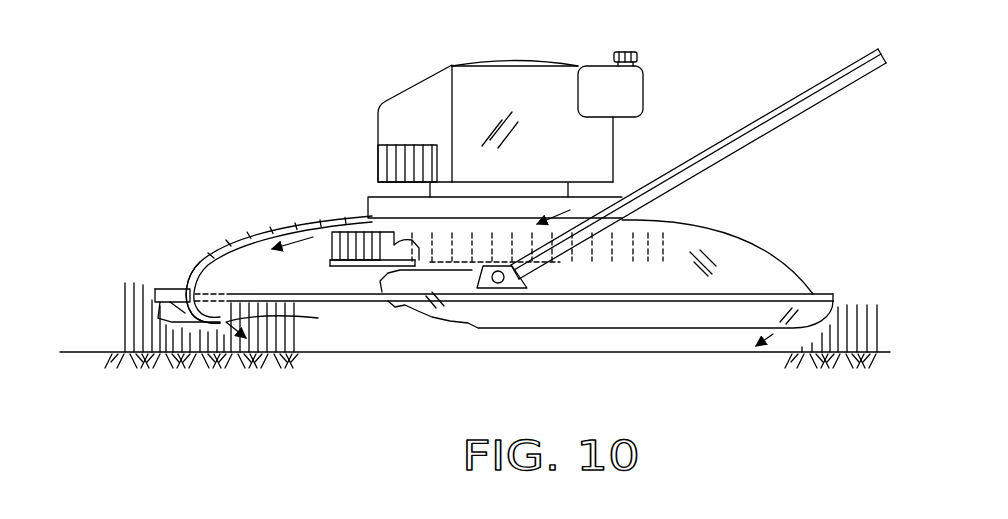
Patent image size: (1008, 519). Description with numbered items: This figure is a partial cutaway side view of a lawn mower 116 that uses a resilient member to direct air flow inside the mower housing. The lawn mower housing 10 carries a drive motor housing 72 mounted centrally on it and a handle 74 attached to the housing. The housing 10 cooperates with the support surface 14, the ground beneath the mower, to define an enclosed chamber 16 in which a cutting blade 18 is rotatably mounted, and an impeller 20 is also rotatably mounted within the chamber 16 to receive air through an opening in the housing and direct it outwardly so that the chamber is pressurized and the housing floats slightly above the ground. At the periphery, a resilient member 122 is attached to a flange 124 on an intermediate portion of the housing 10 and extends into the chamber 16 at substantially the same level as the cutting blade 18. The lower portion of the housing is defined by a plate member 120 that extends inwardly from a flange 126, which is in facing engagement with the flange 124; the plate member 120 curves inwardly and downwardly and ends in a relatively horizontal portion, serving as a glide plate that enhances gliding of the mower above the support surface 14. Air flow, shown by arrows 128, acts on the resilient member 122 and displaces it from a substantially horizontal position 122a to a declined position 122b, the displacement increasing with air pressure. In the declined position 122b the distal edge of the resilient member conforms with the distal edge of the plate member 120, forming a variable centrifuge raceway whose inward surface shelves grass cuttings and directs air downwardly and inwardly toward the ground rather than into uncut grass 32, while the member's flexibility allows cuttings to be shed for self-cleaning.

The lawn mower housing 10 is at (317, 217).
The support surface 14 is at (78, 352).
The enclosed chamber 16 is at (258, 291).
The cutting blade 18 is at (290, 298).
The impeller 20 is at (688, 240).
The uncut grass 32 is at (300, 337).
The drive motor housing 72 is at (540, 62).
The handle 74 is at (728, 133).
The lawn mower 116 is at (357, 81).
The plate member 120 is at (206, 360).
The resilient member 122 is at (188, 363).
The horizontal position 122a is at (210, 294).
The declined position 122b is at (240, 367).
The flange 124 is at (168, 292).
The flange 126 is at (160, 363).
The arrows 128 is at (196, 291).